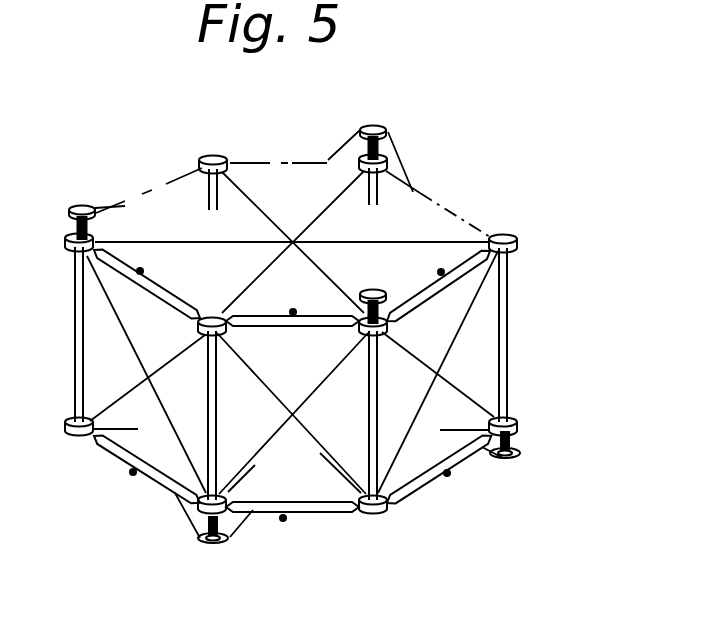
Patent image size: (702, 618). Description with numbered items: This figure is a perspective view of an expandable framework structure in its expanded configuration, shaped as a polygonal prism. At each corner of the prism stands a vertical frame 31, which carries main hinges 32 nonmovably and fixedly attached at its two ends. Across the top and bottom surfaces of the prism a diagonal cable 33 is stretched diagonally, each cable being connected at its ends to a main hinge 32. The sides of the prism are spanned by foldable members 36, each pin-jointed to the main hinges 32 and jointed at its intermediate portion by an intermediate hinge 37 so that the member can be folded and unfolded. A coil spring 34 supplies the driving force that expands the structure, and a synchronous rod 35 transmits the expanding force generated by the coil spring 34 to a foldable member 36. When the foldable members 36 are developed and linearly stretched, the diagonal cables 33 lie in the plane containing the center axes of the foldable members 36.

The vertical frame 31 is at (512, 343).
The main hinge 32 is at (517, 244).
The diagonal cable 33 is at (345, 238).
The coil spring 34 is at (386, 303).
The synchronous rod 35 is at (333, 306).
The foldable member 36 is at (472, 258).
The intermediate hinge 37 is at (442, 270).